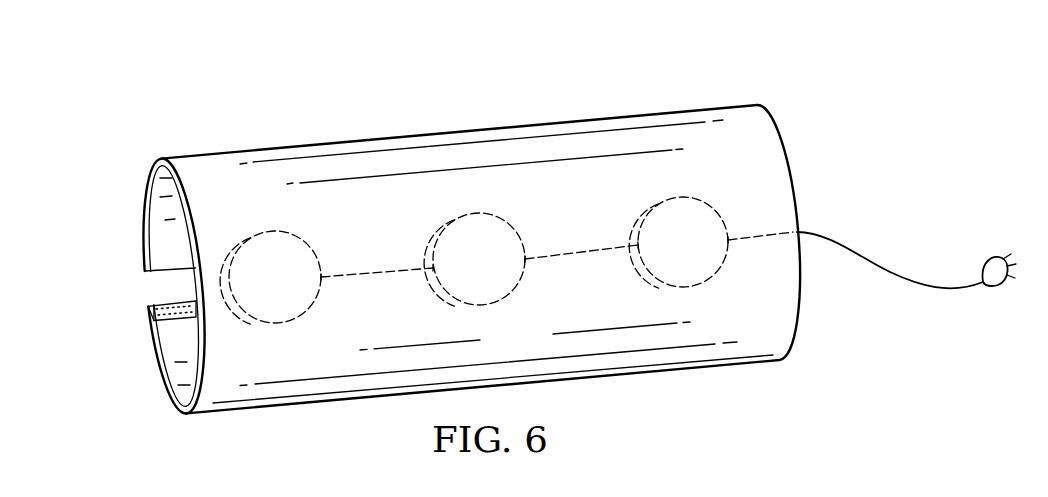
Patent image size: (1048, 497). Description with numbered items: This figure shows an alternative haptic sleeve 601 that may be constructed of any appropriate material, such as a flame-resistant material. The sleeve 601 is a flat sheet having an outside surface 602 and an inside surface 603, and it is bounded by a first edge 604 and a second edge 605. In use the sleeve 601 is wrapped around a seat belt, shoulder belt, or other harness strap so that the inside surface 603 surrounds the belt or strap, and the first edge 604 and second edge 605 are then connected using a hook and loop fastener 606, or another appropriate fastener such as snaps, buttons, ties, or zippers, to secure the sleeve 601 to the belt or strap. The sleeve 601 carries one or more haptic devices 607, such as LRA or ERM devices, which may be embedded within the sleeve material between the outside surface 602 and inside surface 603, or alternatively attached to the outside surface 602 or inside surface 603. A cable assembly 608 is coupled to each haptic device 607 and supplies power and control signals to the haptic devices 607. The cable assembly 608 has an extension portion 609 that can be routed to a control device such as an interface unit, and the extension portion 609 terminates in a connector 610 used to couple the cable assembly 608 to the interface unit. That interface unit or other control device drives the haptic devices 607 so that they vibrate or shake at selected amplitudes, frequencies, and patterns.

The haptic sleeve 601 is at (560, 122).
The outside surface 602 is at (220, 163).
The inside surface 603 is at (160, 227).
The first edge 604 is at (148, 272).
The second edge 605 is at (170, 303).
The hook and loop fastener 606 is at (173, 322).
The haptic device 607 is at (293, 319).
The cable assembly 608 is at (380, 265).
The extension portion 609 is at (905, 283).
The connector 610 is at (998, 290).